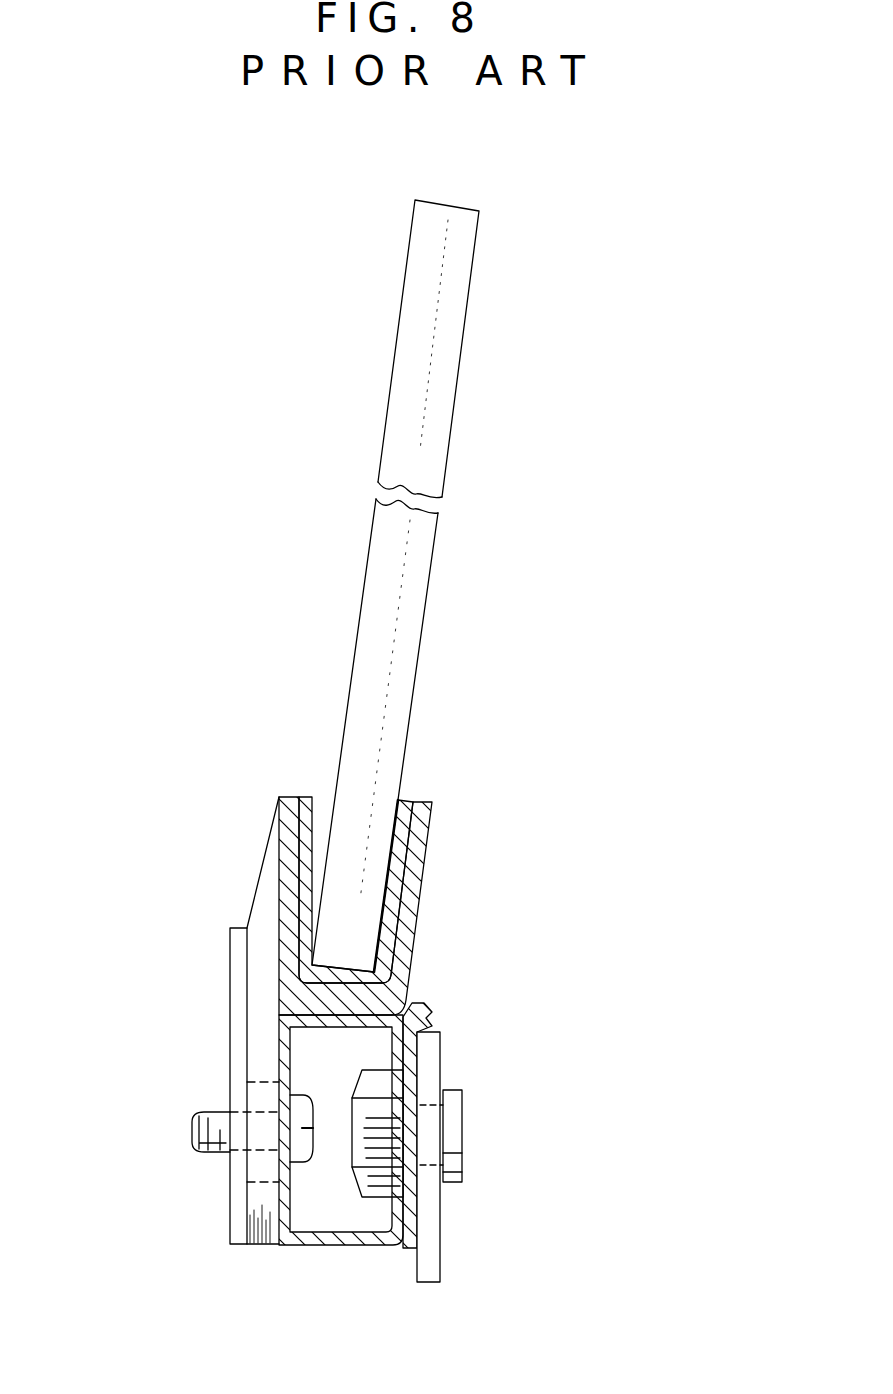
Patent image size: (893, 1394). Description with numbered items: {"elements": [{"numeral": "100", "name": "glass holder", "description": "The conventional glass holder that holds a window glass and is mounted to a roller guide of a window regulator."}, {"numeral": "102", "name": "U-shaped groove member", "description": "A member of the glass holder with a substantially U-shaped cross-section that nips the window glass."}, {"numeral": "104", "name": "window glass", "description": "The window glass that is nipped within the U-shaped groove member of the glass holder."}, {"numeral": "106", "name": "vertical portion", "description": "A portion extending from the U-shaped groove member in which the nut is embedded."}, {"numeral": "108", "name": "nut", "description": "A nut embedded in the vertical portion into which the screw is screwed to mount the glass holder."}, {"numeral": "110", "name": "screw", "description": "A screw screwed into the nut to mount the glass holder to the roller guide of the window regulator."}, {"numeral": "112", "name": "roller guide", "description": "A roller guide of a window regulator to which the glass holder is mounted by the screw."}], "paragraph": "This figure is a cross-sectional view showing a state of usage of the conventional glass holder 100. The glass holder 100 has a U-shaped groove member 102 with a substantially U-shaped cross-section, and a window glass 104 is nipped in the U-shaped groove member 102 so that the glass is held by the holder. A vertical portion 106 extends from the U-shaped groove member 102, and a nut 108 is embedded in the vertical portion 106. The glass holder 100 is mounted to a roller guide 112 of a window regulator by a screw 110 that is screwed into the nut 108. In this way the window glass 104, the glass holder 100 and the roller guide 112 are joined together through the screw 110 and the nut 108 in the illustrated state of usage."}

The bracket 100 is at (441, 932).
The holder 102 is at (392, 998).
The rod 104 is at (412, 708).
The plate 106 is at (232, 997).
The spacer 108 is at (268, 1085).
The nut 110 is at (192, 1130).
The box portion 112 is at (310, 1240).